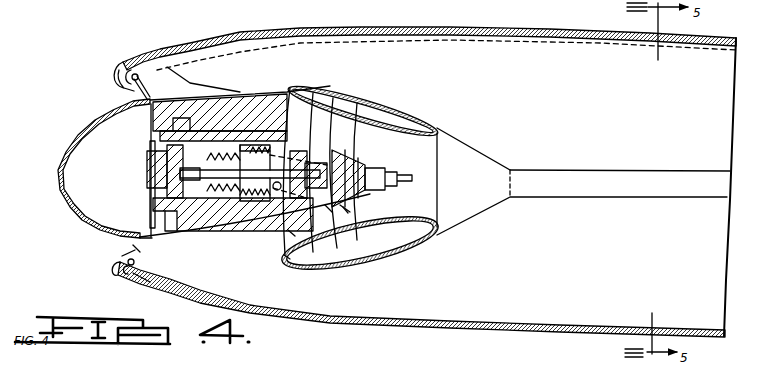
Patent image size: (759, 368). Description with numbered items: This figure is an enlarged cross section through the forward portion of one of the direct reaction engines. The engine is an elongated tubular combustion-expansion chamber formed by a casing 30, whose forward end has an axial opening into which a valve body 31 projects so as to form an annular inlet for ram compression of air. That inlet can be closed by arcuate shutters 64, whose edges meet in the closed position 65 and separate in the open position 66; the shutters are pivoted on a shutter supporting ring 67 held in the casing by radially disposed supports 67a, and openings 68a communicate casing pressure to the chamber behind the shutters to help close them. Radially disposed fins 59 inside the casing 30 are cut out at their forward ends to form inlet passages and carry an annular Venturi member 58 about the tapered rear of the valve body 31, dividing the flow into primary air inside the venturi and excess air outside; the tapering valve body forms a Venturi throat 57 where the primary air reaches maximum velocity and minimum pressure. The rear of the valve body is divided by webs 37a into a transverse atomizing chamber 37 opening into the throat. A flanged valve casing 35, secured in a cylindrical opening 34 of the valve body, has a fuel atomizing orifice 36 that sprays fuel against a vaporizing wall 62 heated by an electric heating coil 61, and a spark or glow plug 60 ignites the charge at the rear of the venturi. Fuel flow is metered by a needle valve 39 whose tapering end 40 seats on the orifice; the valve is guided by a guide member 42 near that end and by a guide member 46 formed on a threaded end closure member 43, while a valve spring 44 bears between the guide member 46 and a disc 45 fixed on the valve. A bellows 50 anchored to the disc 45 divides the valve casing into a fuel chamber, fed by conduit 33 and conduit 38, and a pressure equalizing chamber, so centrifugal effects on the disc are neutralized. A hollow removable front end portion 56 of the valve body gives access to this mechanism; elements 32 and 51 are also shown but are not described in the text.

The casing 30 is at (447, 332).
The valve body 31 is at (217, 105).
The housing lower wall 32 is at (238, 233).
The conduit 33 is at (207, 118).
The cylindrical opening 34 is at (244, 130).
The flanged valve casing 35 is at (262, 143).
The fuel atomizing orifice 36 is at (345, 215).
The atomizing chamber 37 is at (352, 140).
The web 37a is at (393, 106).
The conduit 38 is at (292, 238).
The needle valve 39 is at (328, 215).
The tapering end 40 is at (333, 140).
The guide member 42 is at (314, 150).
The threaded end closure member 43 is at (180, 233).
The valve spring 44 is at (220, 200).
The disc 45 is at (252, 200).
The guide member 46 is at (207, 200).
The bellows 50 is at (284, 88).
The ring edge 51 is at (287, 266).
The hollow removable front end portion 56 is at (60, 196).
The Venturi throat 57 is at (378, 130).
The annular Venturi member 58 is at (440, 126).
The fin 59 is at (540, 66).
The spark or glow plug 60 is at (393, 186).
The electric heating coil 61 is at (347, 215).
The vaporizing wall 62 is at (372, 166).
The arcuate shutter 64 is at (143, 240).
The closed position 65 is at (128, 248).
The open position 66 is at (131, 290).
The shutter supporting ring 67 is at (136, 70).
The support 67a is at (122, 66).
The opening 68a is at (186, 47).